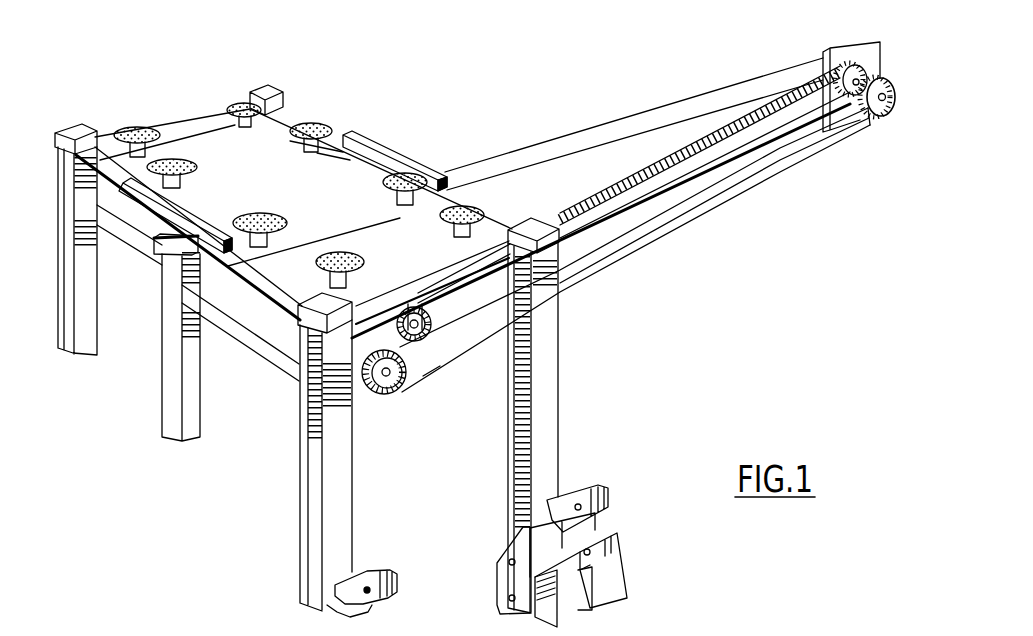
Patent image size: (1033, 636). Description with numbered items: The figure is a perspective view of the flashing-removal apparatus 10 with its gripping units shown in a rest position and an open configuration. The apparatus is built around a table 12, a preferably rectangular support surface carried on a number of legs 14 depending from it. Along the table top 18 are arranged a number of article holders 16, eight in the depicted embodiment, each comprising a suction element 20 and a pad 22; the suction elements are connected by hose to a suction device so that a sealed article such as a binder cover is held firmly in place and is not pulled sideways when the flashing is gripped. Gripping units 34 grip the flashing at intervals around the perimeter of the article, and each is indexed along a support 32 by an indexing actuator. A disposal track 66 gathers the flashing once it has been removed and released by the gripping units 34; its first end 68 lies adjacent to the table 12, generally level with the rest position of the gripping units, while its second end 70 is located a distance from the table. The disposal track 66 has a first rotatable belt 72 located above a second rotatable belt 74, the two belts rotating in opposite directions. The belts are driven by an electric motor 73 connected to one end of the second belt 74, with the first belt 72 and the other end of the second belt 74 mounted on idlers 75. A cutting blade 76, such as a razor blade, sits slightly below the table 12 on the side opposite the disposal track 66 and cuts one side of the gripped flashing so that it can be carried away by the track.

The web handling apparatus 10 is at (426, 147).
The table 12 is at (172, 123).
The legs 14 is at (172, 368).
The article holders 16 is at (237, 104).
The table top 18 is at (262, 196).
The suction element 20 is at (262, 263).
The pad 22 is at (273, 217).
The support 32 is at (297, 455).
The gripping units 34 is at (618, 513).
The disposal track 66 is at (625, 258).
The first end 68 is at (430, 379).
The second end 70 is at (876, 132).
The first rotatable belt 72 is at (663, 157).
The electric motor 73 is at (381, 395).
The second rotatable belt 74 is at (781, 174).
The idlers 75 is at (425, 335).
The cutting blade 76 is at (157, 268).